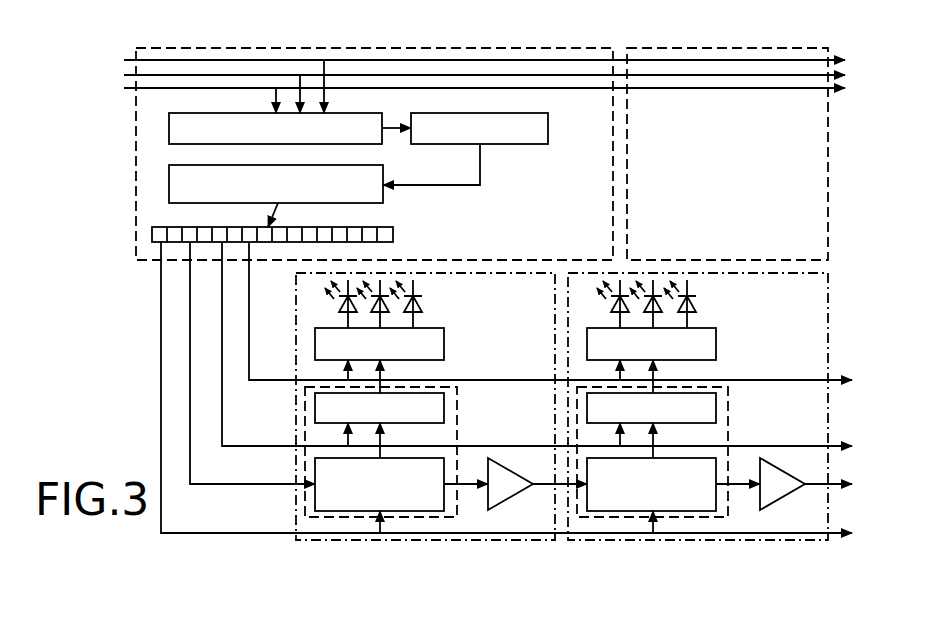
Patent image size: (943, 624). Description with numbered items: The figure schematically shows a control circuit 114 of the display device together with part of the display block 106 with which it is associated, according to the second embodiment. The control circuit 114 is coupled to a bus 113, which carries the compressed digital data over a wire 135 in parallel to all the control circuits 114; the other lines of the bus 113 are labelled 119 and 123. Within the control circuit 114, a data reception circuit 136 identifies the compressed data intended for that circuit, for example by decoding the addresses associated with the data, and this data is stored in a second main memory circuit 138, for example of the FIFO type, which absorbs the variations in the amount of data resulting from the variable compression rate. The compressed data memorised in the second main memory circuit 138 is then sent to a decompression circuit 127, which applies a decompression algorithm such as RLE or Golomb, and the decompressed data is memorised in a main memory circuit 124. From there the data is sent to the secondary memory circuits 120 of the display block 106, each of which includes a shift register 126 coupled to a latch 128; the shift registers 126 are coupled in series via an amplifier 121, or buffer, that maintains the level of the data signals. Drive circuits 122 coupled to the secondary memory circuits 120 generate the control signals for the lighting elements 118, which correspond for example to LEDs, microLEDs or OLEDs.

The display block 106 is at (832, 274).
The bus 113 is at (472, 71).
The control circuit 114 is at (252, 47).
The lighting element 118 is at (423, 310).
The data line 119 is at (130, 60).
The secondary memory circuit 120 is at (405, 517).
The amplifier 121 is at (505, 485).
The drive circuit 122 is at (432, 345).
The clock line 123 is at (130, 75).
The main memory circuit 124 is at (152, 233).
The shift register 126 is at (345, 497).
The decompression circuit 127 is at (182, 177).
The latch 128 is at (432, 412).
The wire 135 is at (130, 88).
The data reception circuit 136 is at (363, 125).
The second main memory circuit 138 is at (492, 125).